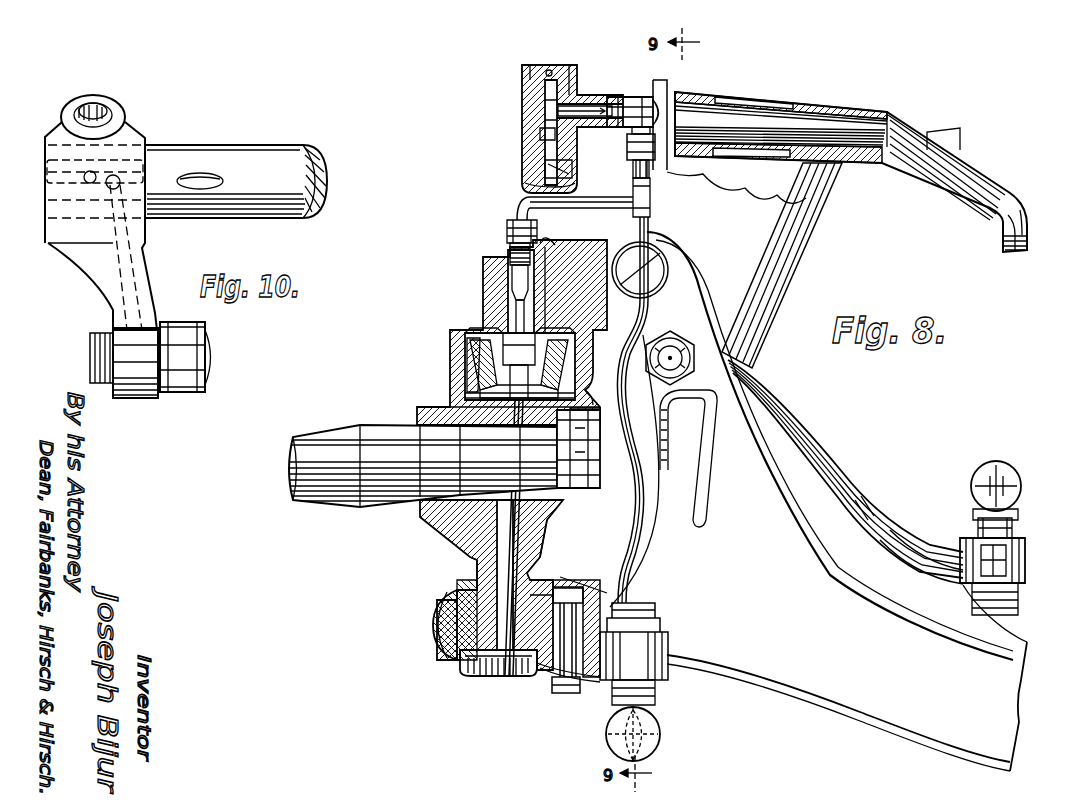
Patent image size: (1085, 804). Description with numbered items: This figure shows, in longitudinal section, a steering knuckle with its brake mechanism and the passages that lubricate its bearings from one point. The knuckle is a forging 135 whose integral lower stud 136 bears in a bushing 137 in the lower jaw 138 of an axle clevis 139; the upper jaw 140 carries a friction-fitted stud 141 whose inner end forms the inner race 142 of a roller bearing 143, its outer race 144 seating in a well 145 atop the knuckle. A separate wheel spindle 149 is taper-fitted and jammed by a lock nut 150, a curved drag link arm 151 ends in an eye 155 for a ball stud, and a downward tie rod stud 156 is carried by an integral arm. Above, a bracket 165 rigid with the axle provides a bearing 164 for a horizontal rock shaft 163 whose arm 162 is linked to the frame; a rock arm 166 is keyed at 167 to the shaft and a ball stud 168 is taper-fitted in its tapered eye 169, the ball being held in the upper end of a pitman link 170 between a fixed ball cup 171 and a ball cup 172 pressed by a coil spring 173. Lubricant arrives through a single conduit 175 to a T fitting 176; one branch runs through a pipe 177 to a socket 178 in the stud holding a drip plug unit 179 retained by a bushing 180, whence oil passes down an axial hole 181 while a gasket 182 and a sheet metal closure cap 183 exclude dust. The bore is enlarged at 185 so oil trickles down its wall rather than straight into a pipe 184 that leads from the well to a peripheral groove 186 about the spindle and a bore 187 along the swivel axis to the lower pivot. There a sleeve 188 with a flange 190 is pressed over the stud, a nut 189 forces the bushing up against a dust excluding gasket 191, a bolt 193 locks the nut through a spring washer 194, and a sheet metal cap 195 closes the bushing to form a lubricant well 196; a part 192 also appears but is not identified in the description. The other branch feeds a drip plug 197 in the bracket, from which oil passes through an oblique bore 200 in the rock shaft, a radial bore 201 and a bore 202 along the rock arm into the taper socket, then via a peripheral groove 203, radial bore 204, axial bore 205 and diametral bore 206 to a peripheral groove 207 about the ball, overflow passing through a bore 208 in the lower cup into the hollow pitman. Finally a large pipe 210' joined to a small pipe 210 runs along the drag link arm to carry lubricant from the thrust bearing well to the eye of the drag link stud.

In FIG. 8, the forging 135 is at (453, 510).
In FIG. 8, the lower stud 136 is at (442, 635).
In FIG. 8, the bushing 137 is at (436, 618).
In FIG. 8, the lower jaw 138 is at (542, 680).
In FIG. 8, the axle clevis 139 is at (648, 500).
In FIG. 8, the upper jaw 140 is at (555, 245).
In FIG. 8, the stud 141 is at (500, 305).
In FIG. 8, the inner race 142 is at (470, 357).
In FIG. 8, the roller bearing 143 is at (465, 370).
In FIG. 8, the outer race 144 is at (480, 383).
In FIG. 8, the well 145 is at (503, 393).
In FIG. 8, the wheel spindle 149 is at (337, 453).
In FIG. 8, the lock nut 150 is at (575, 488).
In FIG. 8, the drag link arm 151 is at (881, 511).
In FIG. 8, the eye 155 is at (1022, 558).
In FIG. 8, the tie rod stud 156 is at (652, 697).
In FIG. 8, the arm 162 is at (967, 190).
In FIG. 10, the rock shaft 163 is at (270, 158).
In FIG. 8, the rock shaft 163 is at (820, 127).
In FIG. 8, the bearing 164 is at (687, 92).
In FIG. 8, the bracket 165 is at (760, 247).
In FIG. 10, the rock arm 166 is at (137, 270).
In FIG. 10, the key 167 is at (110, 123).
In FIG. 10, the ball stud 168 is at (100, 353).
In FIG. 8, the ball stud 168 is at (620, 92).
In FIG. 10, the tapered eye 169 is at (128, 395).
In FIG. 8, the pitman link 170 is at (525, 185).
In FIG. 8, the fixed ball cup 171 is at (543, 65).
In FIG. 8, the ball cup 172 is at (527, 140).
In FIG. 8, the coil spring 173 is at (528, 168).
In FIG. 8, the conduit 175 is at (650, 307).
In FIG. 8, the T fitting 176 is at (652, 205).
In FIG. 8, the pipe 177 is at (580, 203).
In FIG. 8, the socket 178 is at (515, 280).
In FIG. 8, the drip plug unit 179 is at (510, 272).
In FIG. 8, the bushing 180 is at (507, 233).
In FIG. 8, the axial hole 181 is at (500, 318).
In FIG. 8, the gasket 182 is at (466, 338).
In FIG. 8, the closure cap 183 is at (588, 327).
In FIG. 8, the pipe 184 is at (583, 420).
In FIG. 8, the enlarged bore 185 is at (577, 380).
In FIG. 8, the peripheral groove 186 is at (553, 513).
In FIG. 8, the bore 187 is at (516, 553).
In FIG. 8, the sleeve 188 is at (440, 647).
In FIG. 8, the nut 189 is at (458, 595).
In FIG. 8, the flange 190 is at (460, 582).
In FIG. 8, the dust excluding gasket 191 is at (547, 590).
In FIG. 8, the shoulder 192 is at (480, 567).
In FIG. 8, the bolt 193 is at (593, 679).
In FIG. 8, the spring washer 194 is at (547, 692).
In FIG. 8, the sheet metal cap 195 is at (475, 672).
In FIG. 8, the well 196 is at (503, 676).
In FIG. 8, the drip plug 197 is at (653, 163).
In FIG. 10, the oblique bore 200 is at (167, 170).
In FIG. 10, the radial bore 201 is at (103, 193).
In FIG. 10, the bore 202 is at (120, 287).
In FIG. 8, the peripheral groove 203 is at (630, 163).
In FIG. 8, the radial bore 204 is at (630, 92).
In FIG. 8, the axial bore 205 is at (585, 105).
In FIG. 8, the diametral bore 206 is at (528, 108).
In FIG. 8, the peripheral groove 207 is at (630, 140).
In FIG. 8, the longitudinal bore 208 is at (530, 133).
In FIG. 8, the small pipe 210 is at (921, 543).
In FIG. 8, the large pipe 210' is at (845, 469).